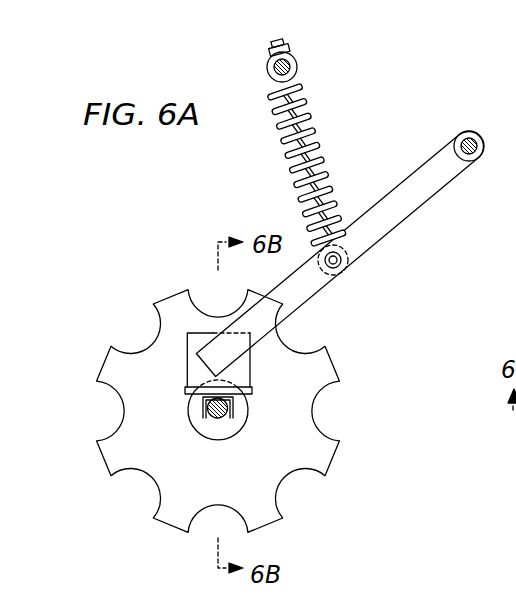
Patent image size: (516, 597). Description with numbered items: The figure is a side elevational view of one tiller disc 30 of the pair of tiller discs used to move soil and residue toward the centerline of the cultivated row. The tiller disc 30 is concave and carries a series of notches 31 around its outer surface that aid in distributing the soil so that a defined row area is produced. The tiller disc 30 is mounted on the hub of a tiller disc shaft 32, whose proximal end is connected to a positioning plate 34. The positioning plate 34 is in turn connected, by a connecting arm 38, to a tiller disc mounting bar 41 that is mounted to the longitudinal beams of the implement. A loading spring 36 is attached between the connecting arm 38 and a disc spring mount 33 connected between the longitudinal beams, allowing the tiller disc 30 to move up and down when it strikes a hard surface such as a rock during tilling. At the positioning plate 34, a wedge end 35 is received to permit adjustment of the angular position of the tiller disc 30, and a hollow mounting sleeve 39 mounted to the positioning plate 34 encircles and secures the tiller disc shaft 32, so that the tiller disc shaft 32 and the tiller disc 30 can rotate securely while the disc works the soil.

The tiller disc 30 is at (225, 385).
The notches 31 is at (172, 300).
The tiller disc shaft 32 is at (222, 422).
The disc spring mount 33 is at (297, 63).
The positioning plate 34 is at (242, 386).
The wedge end 35 is at (233, 408).
The loading spring 36 is at (312, 145).
The connecting arm 38 is at (418, 195).
The mounting sleeve 39 is at (203, 408).
The tiller disc mounting bar 41 is at (475, 136).